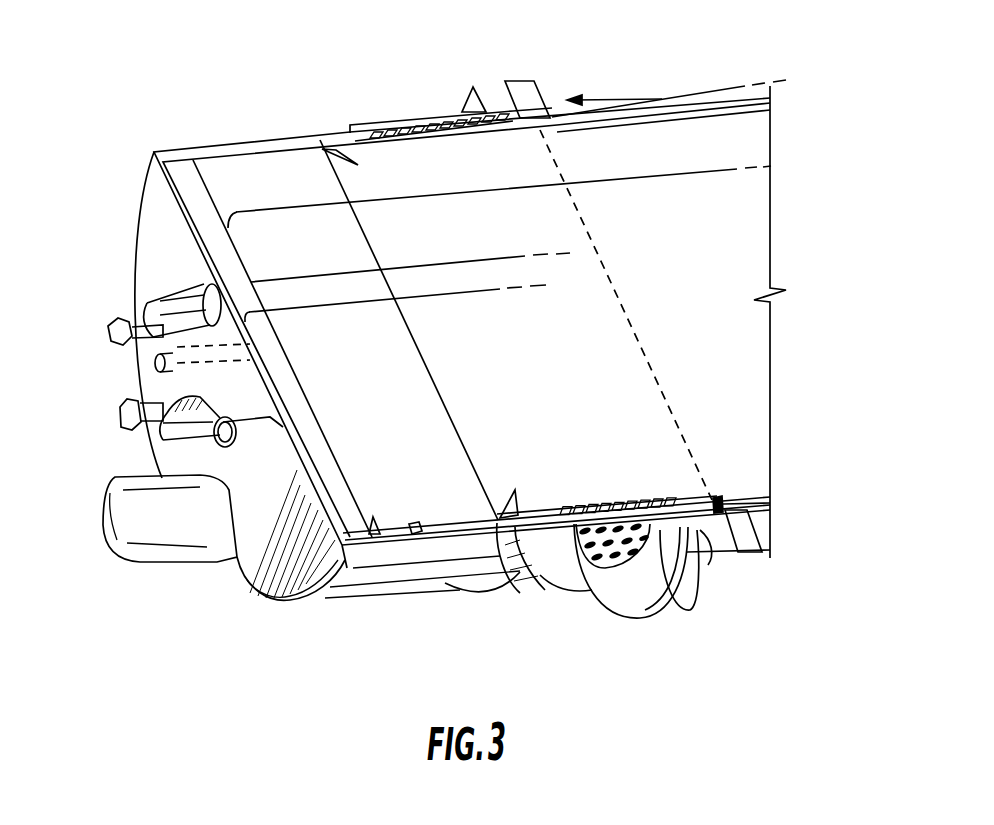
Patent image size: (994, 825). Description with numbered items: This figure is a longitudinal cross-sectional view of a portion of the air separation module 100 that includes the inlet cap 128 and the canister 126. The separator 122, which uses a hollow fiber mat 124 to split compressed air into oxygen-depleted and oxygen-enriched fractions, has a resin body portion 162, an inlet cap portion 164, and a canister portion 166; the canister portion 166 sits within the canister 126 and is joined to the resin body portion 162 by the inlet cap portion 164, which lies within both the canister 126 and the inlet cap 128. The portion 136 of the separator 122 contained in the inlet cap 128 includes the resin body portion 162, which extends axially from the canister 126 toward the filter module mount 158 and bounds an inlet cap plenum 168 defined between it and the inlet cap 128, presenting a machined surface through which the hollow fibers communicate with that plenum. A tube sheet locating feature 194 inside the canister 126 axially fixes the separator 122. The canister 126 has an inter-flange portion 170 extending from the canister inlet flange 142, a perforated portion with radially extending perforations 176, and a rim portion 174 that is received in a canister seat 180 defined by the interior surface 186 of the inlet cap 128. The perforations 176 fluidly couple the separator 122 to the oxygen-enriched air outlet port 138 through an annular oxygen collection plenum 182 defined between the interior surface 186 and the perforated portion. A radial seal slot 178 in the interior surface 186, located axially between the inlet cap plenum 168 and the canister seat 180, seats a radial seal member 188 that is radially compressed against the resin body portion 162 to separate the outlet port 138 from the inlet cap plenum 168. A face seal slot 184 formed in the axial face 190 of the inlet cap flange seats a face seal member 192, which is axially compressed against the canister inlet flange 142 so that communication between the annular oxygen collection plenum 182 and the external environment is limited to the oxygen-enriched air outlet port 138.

The air separation module 100 is at (175, 672).
The separator 122 is at (521, 186).
The hollow fiber mat 124 is at (317, 346).
The canister 126 is at (637, 112).
The inlet cap 128 is at (210, 156).
The portion of the separator 136 is at (327, 297).
The oxygen-enriched air outlet port 138 is at (634, 570).
The canister inlet flange 142 is at (688, 582).
The filter module mount 158 is at (192, 337).
The resin body portion 162 is at (263, 260).
The inlet cap portion 164 is at (422, 218).
The canister portion 166 is at (727, 207).
The inlet cap plenum 168 is at (203, 238).
The inter-flange portion 170 is at (448, 118).
The rim portion 174 is at (338, 114).
The perforations 176 is at (462, 140).
The radial seal slot 178 is at (415, 508).
The canister seat 180 is at (512, 572).
The annular oxygen collection plenum 182 is at (597, 585).
The face seal slot 184 is at (724, 490).
The interior surface 186 is at (373, 519).
The radial seal member 188 is at (418, 536).
The axial face 190 is at (727, 550).
The face seal member 192 is at (517, 100).
The tube sheet locating feature 194 is at (503, 500).